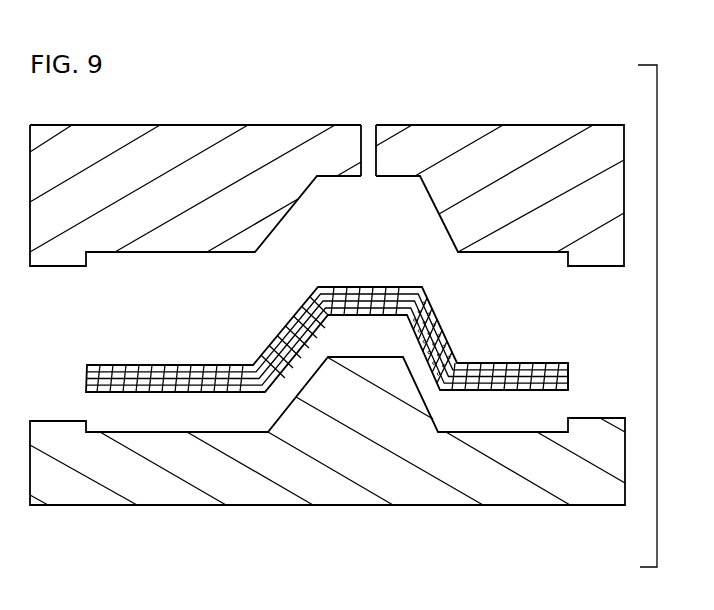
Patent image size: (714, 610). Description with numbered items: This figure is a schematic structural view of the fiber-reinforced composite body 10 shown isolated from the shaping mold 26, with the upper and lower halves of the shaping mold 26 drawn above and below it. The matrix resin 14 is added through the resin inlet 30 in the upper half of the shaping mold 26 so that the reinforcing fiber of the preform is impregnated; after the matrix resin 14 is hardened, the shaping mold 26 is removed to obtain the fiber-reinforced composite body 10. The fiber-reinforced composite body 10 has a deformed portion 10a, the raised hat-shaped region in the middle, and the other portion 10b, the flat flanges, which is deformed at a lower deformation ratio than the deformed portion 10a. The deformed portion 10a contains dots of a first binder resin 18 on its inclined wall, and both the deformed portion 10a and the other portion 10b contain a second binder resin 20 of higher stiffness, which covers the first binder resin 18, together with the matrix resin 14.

The fiber-reinforced composite body 10 is at (354, 331).
The deformed portion 10a is at (426, 303).
The other portion 10b is at (523, 360).
The matrix resin 14 is at (543, 361).
The first binder resin 18 is at (448, 350).
The second binder resin 20 is at (568, 373).
The shaping mold 26 is at (604, 124).
The resin inlet 30 is at (375, 125).